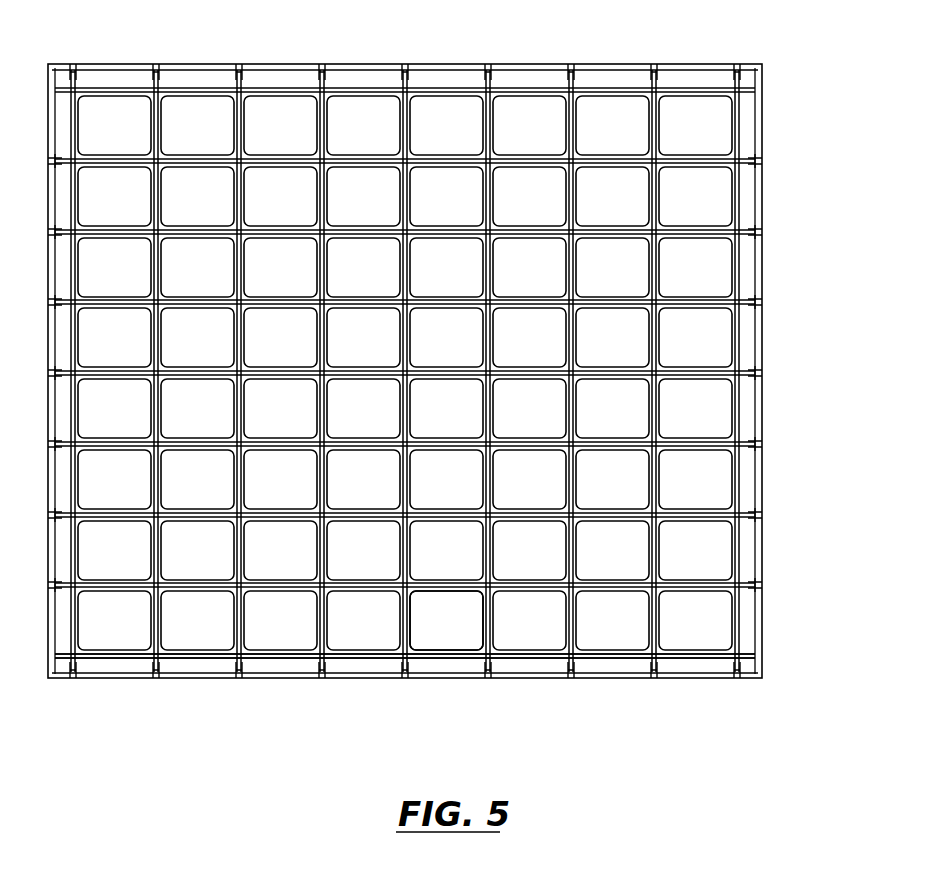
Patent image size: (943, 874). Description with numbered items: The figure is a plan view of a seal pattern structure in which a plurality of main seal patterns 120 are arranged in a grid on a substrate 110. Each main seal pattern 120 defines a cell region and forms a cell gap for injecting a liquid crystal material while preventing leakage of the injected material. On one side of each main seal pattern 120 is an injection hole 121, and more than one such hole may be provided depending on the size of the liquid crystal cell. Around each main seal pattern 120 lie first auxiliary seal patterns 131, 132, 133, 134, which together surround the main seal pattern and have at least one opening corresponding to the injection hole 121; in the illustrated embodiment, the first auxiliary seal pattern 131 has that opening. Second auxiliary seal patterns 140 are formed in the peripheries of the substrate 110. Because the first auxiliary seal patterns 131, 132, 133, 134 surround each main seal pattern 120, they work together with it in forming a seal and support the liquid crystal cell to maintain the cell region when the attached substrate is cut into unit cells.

The substrate 110 is at (763, 598).
The main seal pattern 120 is at (453, 652).
The injection hole 121 is at (410, 623).
The first auxiliary seal pattern 131 is at (402, 612).
The first auxiliary seal pattern 132 is at (435, 655).
The first auxiliary seal pattern 133 is at (453, 587).
The first auxiliary seal pattern 134 is at (487, 622).
The second auxiliary seal pattern 140 is at (185, 673).